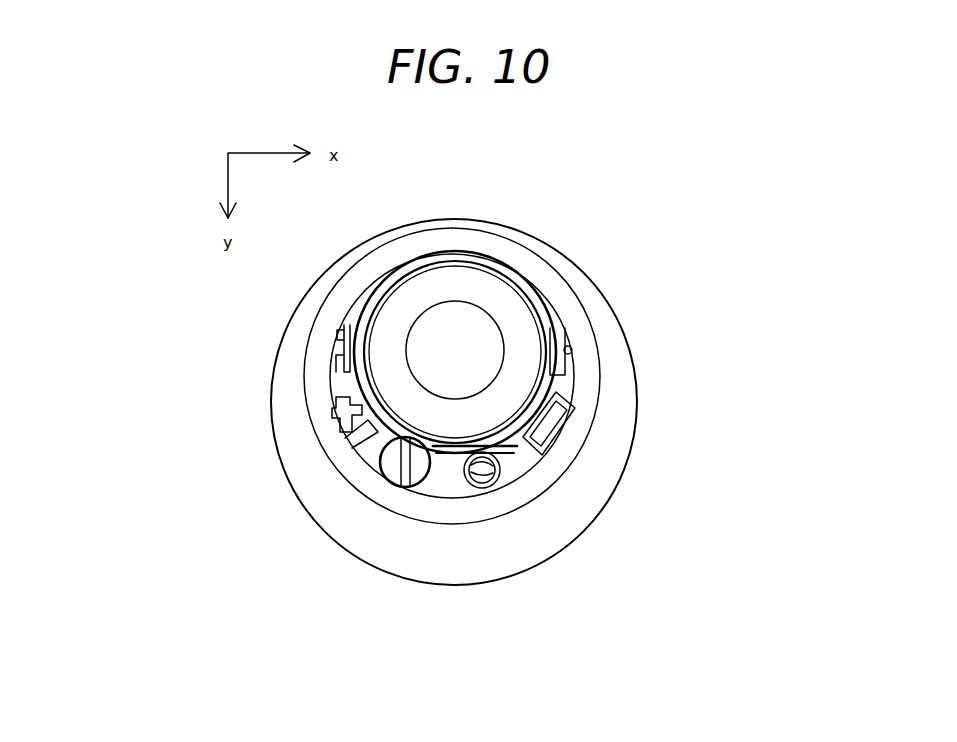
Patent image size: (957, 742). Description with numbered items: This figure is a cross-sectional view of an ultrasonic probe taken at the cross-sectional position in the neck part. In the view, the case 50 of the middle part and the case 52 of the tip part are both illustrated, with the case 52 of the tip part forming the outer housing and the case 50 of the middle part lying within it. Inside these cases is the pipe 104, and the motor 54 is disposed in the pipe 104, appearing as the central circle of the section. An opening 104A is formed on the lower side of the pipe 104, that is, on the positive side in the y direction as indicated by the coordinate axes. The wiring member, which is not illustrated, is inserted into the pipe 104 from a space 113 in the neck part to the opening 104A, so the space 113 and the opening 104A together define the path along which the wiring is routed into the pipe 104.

The case of the middle part 50 is at (585, 310).
The case of the tip part 52 is at (626, 390).
The motor 54 is at (473, 303).
The pipe 104 is at (417, 265).
The opening 104A is at (453, 452).
The space 113 is at (433, 487).